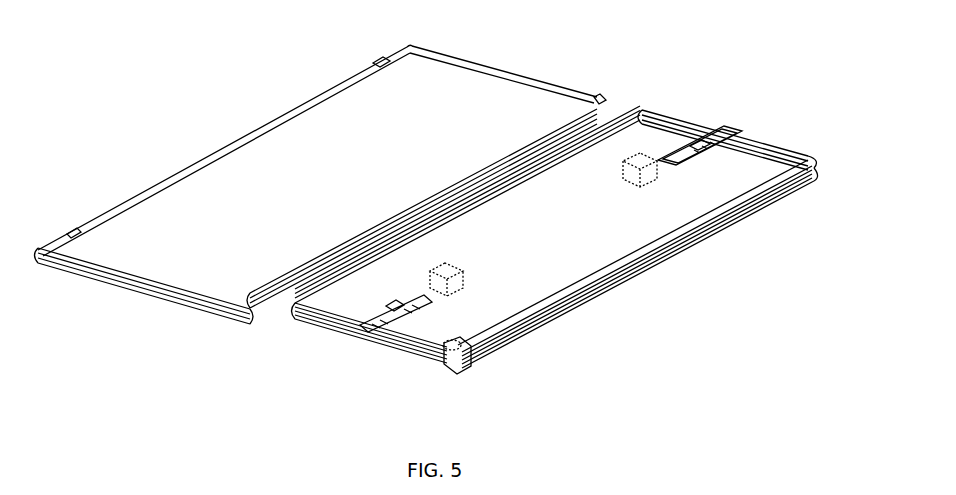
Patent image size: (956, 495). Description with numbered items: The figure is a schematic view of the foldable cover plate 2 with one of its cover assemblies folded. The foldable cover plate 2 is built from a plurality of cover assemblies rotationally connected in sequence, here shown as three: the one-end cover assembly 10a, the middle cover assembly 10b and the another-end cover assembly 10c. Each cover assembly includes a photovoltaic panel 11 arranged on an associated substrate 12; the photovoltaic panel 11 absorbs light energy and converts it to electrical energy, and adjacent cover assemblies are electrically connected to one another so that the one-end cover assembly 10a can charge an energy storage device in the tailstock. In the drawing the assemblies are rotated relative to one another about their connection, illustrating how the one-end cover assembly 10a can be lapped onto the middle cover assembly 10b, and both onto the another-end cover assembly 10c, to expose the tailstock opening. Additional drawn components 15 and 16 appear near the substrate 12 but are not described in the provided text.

The foldable cover plate 2 is at (556, 19).
The one-end cover assembly 10a is at (753, 137).
The middle cover assembly 10b is at (390, 362).
The another-end cover assembly 10c is at (340, 78).
The photovoltaic panel 11 is at (277, 173).
The substrate 12 is at (553, 258).
The block member 15 is at (463, 290).
The corner connector 16 is at (438, 347).